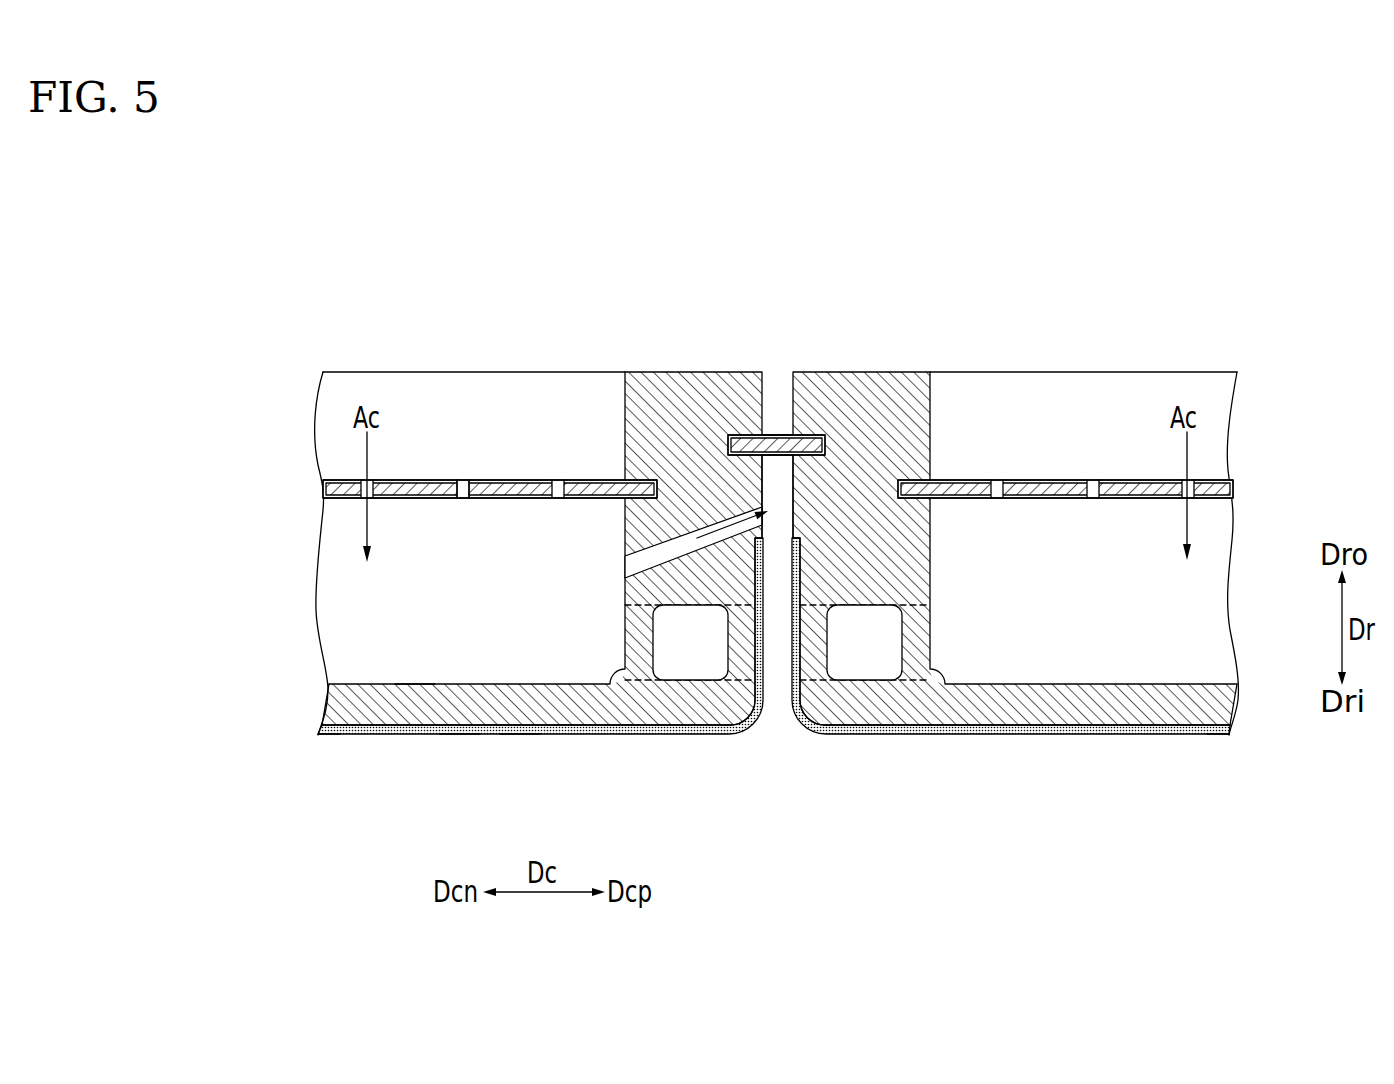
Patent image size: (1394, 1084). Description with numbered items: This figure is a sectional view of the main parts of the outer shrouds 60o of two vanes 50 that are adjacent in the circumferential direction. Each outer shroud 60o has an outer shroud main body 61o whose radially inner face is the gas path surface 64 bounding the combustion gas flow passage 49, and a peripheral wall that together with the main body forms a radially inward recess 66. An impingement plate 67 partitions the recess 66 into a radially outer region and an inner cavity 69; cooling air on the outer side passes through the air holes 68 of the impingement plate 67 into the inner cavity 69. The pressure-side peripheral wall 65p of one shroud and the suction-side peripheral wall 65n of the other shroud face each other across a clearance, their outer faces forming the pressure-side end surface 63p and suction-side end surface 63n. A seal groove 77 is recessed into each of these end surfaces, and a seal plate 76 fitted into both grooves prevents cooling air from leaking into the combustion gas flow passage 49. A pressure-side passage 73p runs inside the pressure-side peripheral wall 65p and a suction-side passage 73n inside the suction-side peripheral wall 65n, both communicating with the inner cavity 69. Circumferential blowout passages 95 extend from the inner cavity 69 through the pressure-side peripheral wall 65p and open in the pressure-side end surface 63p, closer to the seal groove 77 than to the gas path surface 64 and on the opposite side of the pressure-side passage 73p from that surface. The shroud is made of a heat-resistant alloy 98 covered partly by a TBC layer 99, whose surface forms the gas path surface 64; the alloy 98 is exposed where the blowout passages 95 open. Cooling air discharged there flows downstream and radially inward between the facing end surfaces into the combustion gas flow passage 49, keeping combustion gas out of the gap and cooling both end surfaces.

The vane 50 is at (300, 393).
The pressure-side peripheral wall 65p is at (672, 393).
The suction-side peripheral wall 65n is at (858, 392).
The recess 66 is at (372, 682).
The inner cavity 69 is at (363, 605).
The impingement plate 67 is at (330, 492).
The air hole 68 is at (463, 481).
The seal groove 77 is at (733, 443).
The seal plate 76 is at (779, 447).
The circumferential blowout passage 95 is at (628, 563).
The pressure-side passage 73p is at (685, 660).
The suction-side passage 73n is at (863, 660).
The pressure-side end surface 63p is at (763, 665).
The suction-side end surface 63n is at (795, 678).
The combustion gas flow passage 49 is at (783, 848).
The outer shroud main body 61o is at (335, 705).
The outer shroud 60o is at (302, 744).
The alloy 98 is at (415, 707).
The TBC layer 99 is at (460, 734).
The gas path surface 64 is at (518, 731).